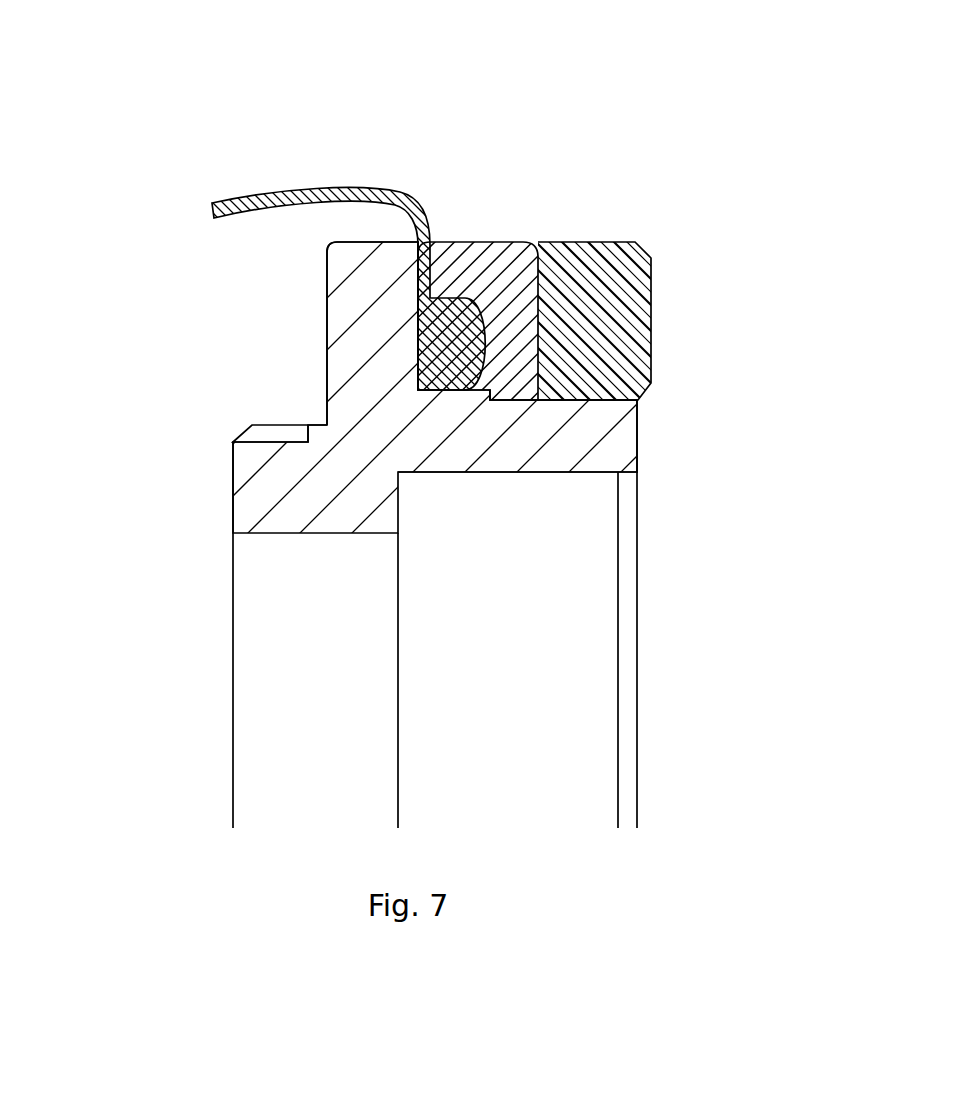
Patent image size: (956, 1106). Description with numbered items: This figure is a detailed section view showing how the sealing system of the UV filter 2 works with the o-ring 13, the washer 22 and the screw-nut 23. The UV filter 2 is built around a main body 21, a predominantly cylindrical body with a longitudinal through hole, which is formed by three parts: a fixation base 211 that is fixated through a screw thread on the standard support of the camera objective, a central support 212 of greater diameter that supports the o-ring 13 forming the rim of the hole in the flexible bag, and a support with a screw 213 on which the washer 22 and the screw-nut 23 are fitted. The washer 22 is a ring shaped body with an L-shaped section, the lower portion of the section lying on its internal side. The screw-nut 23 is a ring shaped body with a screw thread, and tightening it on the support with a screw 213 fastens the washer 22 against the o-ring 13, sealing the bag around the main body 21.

The UV filter 2 is at (478, 350).
The o-ring 13 is at (445, 322).
The main body 21 is at (478, 414).
The washer 22 is at (530, 240).
The screw-nut 23 is at (652, 303).
The fixation base 211 is at (250, 451).
The central support 212 is at (352, 342).
The support with a screw 213 is at (560, 415).